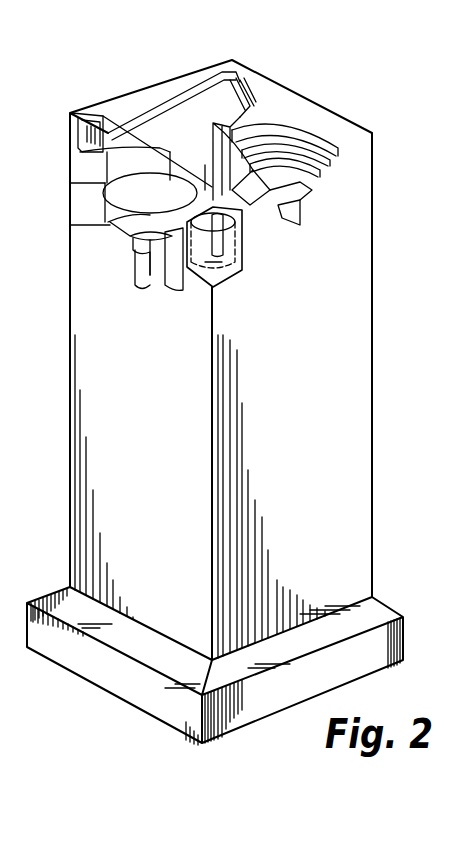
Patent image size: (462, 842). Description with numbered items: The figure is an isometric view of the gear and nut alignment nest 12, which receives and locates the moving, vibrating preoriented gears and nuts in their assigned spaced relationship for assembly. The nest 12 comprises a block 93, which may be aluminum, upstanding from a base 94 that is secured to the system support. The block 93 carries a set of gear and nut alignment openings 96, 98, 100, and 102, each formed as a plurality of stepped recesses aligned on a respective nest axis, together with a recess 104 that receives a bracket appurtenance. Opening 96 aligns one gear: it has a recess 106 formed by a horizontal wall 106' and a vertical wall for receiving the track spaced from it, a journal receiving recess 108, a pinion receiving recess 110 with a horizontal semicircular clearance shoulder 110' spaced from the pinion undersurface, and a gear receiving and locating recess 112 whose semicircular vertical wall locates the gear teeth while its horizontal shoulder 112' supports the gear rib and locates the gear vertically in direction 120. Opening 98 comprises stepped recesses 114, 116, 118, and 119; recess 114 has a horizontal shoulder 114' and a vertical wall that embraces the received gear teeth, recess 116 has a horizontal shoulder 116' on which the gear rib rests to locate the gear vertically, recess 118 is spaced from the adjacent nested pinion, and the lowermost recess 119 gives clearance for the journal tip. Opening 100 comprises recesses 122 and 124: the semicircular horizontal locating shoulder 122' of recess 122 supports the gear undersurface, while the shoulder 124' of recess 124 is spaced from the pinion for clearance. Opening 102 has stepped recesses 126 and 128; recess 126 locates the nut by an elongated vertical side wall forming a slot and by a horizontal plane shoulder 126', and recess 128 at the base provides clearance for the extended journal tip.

The gear and nut alignment nest 12 is at (385, 263).
The block 93 is at (73, 497).
The base 94 is at (98, 680).
The gear alignment opening 96 is at (212, 293).
The gear alignment opening 98 is at (335, 210).
The gear alignment opening 100 is at (98, 238).
The nut alignment opening 102 is at (132, 290).
The recess 104 is at (160, 103).
The recess 106 is at (237, 254).
The horizontal wall 106' is at (232, 302).
The journal receiving recess 108 is at (200, 267).
The pinion receiving recess 110 is at (242, 235).
The pinion clearance shoulder 110' is at (276, 224).
The gear receiving and locating recess 112 is at (305, 209).
The gear plane locating shoulder 112' is at (292, 86).
The recess 114 is at (359, 119).
The horizontal shoulder 114' is at (375, 141).
The recess 116 is at (343, 166).
The horizontal shoulder 116' is at (325, 109).
The recess 118 is at (312, 182).
The lowermost recess 119 is at (287, 223).
The direction 120 is at (219, 37).
The recess 122 is at (64, 143).
The semicircular horizontal locating shoulder 122' is at (125, 155).
The recess 124 is at (135, 198).
The semicircular horizontal shoulder 124' is at (126, 203).
The recess 126 is at (127, 247).
The horizontal plane shoulder 126' is at (116, 267).
The recess 128 is at (138, 283).